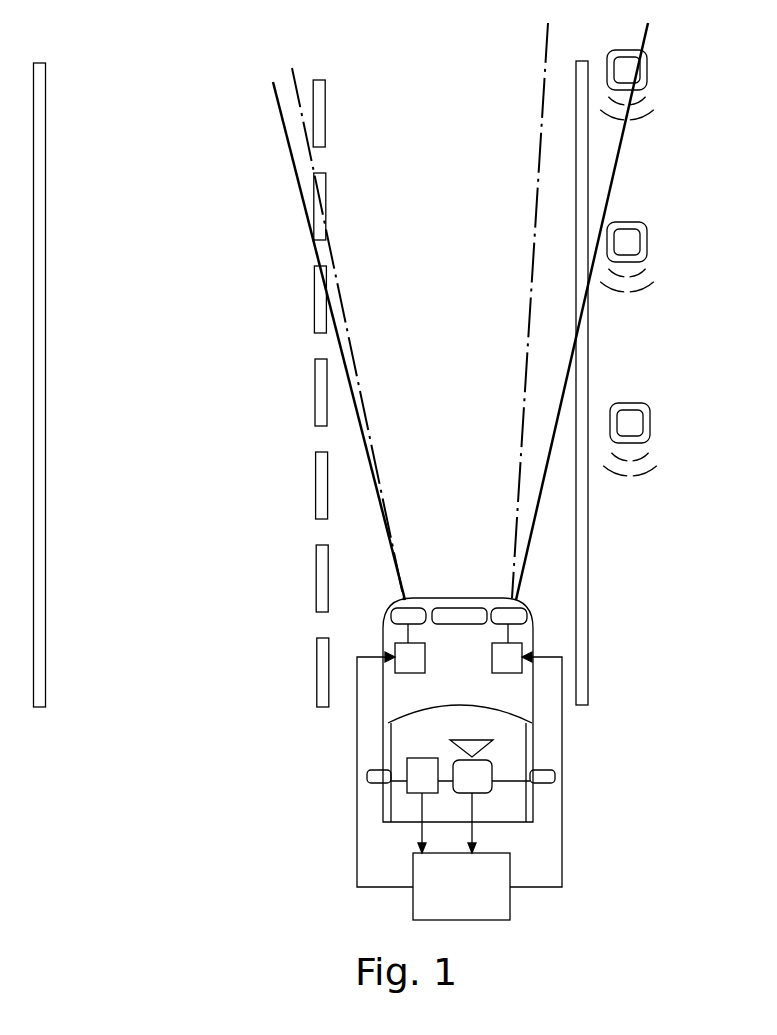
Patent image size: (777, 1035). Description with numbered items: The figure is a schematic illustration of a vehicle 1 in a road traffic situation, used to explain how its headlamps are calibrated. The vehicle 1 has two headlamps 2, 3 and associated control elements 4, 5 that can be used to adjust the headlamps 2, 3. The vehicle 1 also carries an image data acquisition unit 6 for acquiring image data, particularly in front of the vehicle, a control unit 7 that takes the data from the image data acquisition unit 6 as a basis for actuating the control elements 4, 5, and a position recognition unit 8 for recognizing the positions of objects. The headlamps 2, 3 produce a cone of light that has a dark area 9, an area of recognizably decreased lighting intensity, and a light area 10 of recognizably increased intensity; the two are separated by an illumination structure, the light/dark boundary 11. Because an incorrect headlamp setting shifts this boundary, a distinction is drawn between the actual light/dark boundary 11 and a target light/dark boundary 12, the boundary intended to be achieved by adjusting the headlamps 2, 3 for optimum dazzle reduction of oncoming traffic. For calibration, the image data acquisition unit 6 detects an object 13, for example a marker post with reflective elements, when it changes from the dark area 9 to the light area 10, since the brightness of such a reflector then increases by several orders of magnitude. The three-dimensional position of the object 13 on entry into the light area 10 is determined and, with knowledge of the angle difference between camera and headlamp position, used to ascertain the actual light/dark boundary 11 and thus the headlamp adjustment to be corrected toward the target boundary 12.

The vehicle 1 is at (241, 804).
The headlamp 2 is at (400, 645).
The headlamp 3 is at (507, 603).
The control element 4 is at (386, 655).
The control element 5 is at (533, 650).
The image data acquisition unit 6 is at (490, 762).
The control unit 7 is at (459, 786).
The position recognition unit 8 is at (407, 787).
The dark area 9 is at (310, 380).
The light area 10 is at (253, 330).
The light/dark boundary 11 is at (285, 125).
The target light/dark boundary 12 is at (338, 255).
The object 13 is at (648, 63).